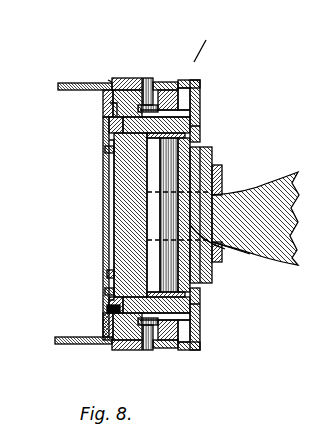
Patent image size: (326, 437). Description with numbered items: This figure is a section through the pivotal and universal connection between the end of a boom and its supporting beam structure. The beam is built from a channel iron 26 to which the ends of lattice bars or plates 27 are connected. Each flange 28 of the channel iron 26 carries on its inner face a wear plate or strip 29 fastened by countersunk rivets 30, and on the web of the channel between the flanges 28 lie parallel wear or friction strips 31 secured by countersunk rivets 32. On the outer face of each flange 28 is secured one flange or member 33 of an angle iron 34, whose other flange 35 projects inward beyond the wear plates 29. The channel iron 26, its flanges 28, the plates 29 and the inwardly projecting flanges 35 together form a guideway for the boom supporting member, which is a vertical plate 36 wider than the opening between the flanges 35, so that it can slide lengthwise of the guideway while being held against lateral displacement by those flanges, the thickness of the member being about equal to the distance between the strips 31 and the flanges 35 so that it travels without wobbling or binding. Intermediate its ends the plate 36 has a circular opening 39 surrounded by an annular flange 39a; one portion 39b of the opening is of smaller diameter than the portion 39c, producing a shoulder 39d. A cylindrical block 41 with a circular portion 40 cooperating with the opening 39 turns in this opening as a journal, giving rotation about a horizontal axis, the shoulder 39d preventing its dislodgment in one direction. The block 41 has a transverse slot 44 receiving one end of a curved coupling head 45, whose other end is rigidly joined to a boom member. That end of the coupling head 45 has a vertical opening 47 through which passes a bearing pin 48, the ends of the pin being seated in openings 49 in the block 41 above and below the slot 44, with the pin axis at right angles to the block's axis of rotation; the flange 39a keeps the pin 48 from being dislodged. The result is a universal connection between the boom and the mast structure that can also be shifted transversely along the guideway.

The channel iron 26 is at (106, 168).
The lattice bar or plate 27 is at (102, 85).
The flange of channel iron 28 is at (146, 78).
The wear plate or strip 29 is at (180, 99).
The countersunk rivet 30 is at (187, 55).
The wear or friction strip 31 is at (103, 138).
The countersunk rivet 32 is at (104, 150).
The flange or member of angle iron 33 is at (118, 78).
The angle iron 34 is at (201, 79).
The inwardly projecting flange of angle iron 35 is at (200, 117).
The vertical plate 36 is at (105, 119).
The circular opening 39 is at (103, 301).
The annular flange 39a is at (190, 128).
The smaller-diameter portion of opening 39b is at (108, 275).
The larger-diameter portion of opening 39c is at (72, 374).
The shoulder 39d is at (110, 80).
The circular portion of block 40 is at (150, 193).
The cylindrical block 41 is at (212, 150).
The transverse slot or opening 44 is at (214, 254).
The curved coupling head 45 is at (280, 177).
The vertical opening 47 is at (213, 242).
The bearing pin 48 is at (165, 215).
The opening in block 49 is at (212, 173).